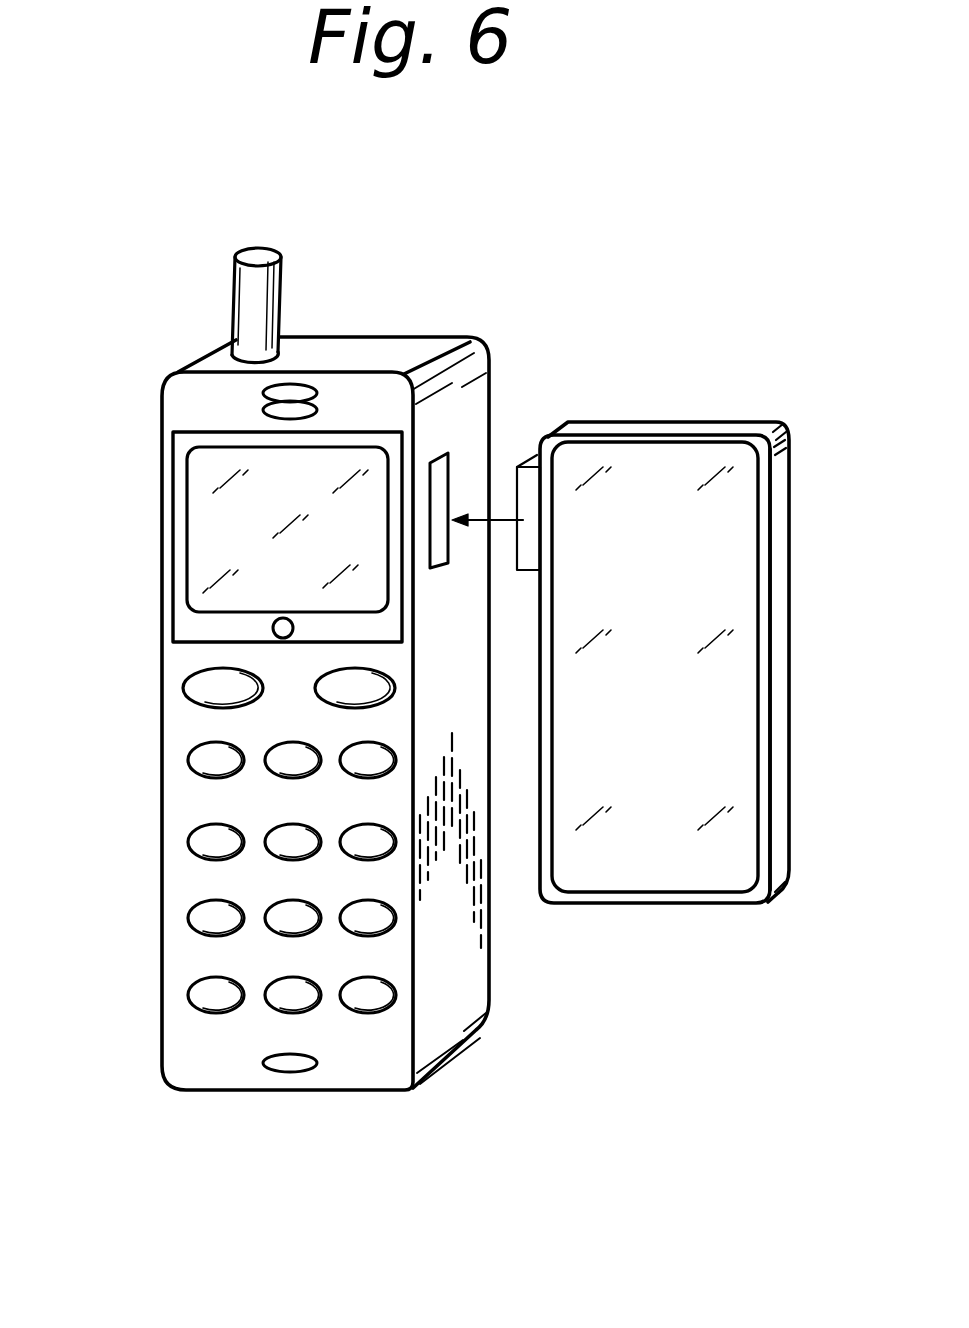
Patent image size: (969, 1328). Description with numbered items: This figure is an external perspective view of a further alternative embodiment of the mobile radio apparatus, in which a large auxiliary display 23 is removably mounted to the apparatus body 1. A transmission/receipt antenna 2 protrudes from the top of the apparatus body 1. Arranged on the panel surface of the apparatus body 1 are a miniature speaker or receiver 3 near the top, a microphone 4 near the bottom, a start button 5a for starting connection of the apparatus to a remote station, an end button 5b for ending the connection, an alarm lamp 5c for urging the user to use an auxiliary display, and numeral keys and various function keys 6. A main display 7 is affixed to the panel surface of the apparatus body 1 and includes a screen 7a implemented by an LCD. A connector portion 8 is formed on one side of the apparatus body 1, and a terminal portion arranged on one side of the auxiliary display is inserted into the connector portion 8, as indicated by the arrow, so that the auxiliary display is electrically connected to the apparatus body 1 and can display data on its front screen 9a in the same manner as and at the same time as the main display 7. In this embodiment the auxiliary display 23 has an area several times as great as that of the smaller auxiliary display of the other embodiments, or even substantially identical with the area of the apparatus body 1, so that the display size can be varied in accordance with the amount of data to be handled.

The apparatus body 1 is at (372, 1045).
The transmission/receipt antenna 2 is at (248, 298).
The miniature speaker or receiver 3 is at (292, 392).
The microphone 4 is at (292, 1070).
The start button 5a is at (205, 688).
The end button 5b is at (338, 688).
The alarm lamp 5c is at (273, 626).
The numeral keys and function keys 6 is at (138, 1005).
The main display 7 is at (172, 522).
The screen 7a is at (227, 490).
The connector portion 8 is at (437, 477).
The screen 9a is at (740, 550).
The auxiliary display 23 is at (792, 660).